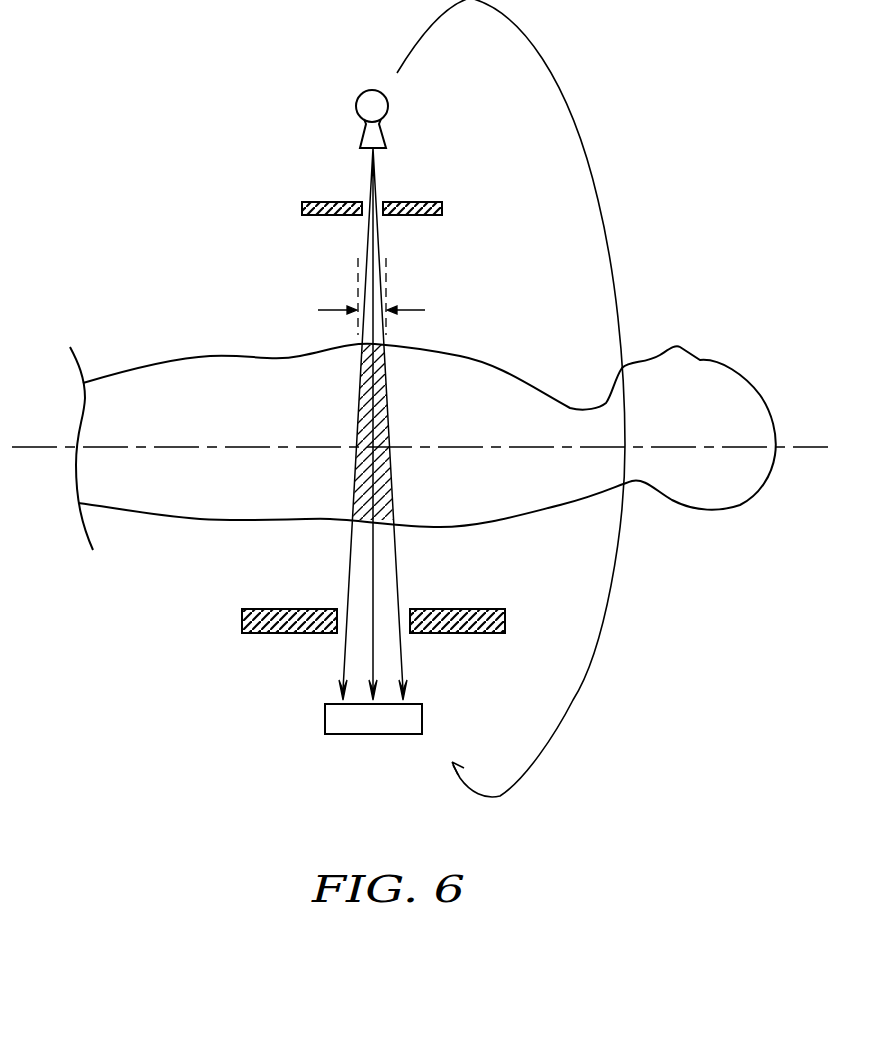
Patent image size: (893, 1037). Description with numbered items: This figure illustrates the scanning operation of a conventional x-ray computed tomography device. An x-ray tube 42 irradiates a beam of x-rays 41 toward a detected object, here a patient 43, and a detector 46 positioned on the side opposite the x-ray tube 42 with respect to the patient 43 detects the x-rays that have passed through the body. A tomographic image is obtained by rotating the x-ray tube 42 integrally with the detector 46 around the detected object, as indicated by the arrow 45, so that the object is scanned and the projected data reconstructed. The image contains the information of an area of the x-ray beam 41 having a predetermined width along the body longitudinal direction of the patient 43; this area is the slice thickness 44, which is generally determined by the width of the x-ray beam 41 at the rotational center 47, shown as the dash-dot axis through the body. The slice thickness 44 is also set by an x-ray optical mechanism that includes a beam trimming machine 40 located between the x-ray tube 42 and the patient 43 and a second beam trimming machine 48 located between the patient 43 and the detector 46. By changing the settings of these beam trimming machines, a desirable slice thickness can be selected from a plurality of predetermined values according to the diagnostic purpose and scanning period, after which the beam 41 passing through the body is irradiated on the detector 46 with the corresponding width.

The beam trimming machine 40 is at (445, 207).
The x-ray beam 41 is at (378, 249).
The x-ray tube 42 is at (355, 105).
The patient 43 is at (708, 510).
The slice thickness 44 is at (352, 308).
The arrow 45 is at (589, 139).
The detector 46 is at (323, 718).
The rotational center 47 is at (797, 445).
The beam trimming machine 48 is at (507, 620).